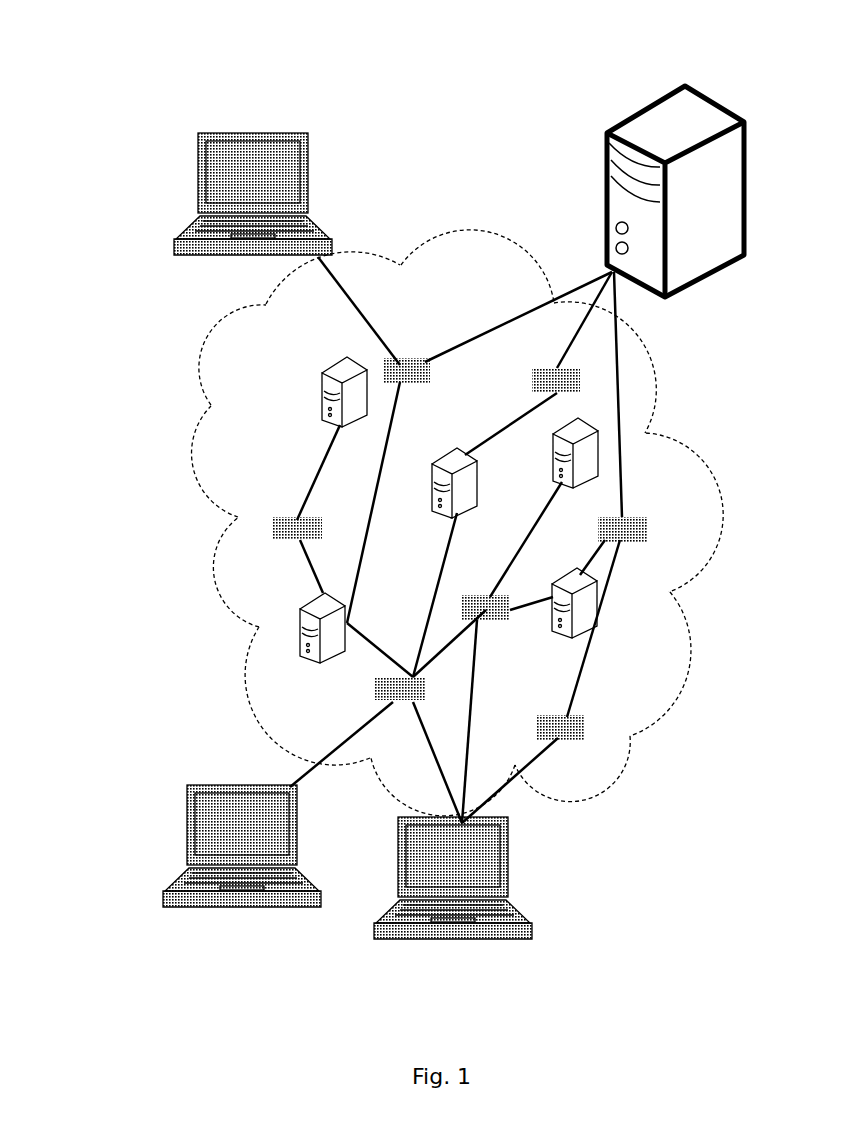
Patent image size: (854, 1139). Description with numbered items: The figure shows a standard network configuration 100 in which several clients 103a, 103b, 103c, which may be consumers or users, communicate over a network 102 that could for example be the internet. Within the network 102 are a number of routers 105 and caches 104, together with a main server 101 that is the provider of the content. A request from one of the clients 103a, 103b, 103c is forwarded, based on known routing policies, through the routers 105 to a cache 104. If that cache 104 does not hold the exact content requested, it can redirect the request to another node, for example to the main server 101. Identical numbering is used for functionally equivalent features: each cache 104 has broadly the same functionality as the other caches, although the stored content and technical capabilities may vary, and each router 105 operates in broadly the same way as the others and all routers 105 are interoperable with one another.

The network configuration 100 is at (112, 85).
The main server 101 is at (680, 130).
The network 102 is at (288, 348).
The client 103a is at (260, 172).
The client 103b is at (240, 832).
The client 103c is at (477, 868).
The cache 104 is at (327, 632).
The router 105 is at (546, 370).